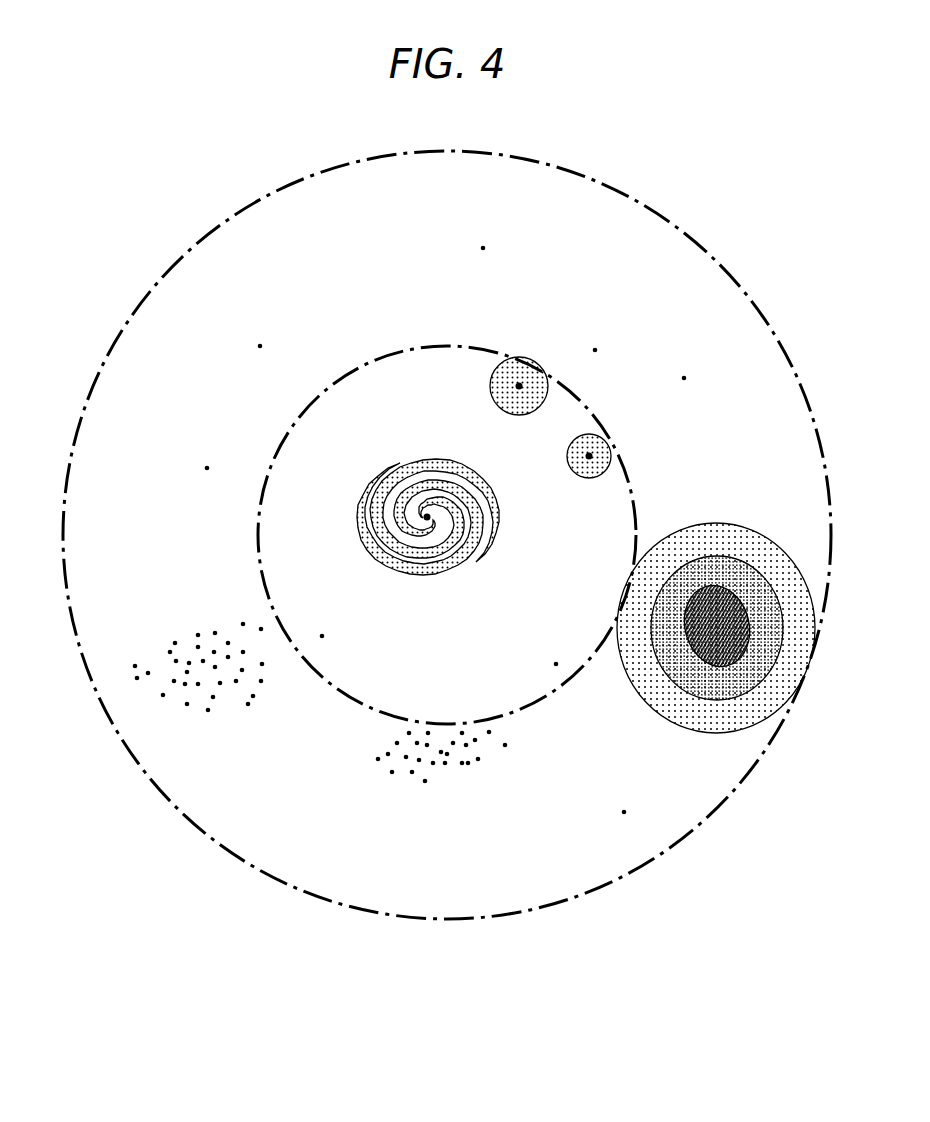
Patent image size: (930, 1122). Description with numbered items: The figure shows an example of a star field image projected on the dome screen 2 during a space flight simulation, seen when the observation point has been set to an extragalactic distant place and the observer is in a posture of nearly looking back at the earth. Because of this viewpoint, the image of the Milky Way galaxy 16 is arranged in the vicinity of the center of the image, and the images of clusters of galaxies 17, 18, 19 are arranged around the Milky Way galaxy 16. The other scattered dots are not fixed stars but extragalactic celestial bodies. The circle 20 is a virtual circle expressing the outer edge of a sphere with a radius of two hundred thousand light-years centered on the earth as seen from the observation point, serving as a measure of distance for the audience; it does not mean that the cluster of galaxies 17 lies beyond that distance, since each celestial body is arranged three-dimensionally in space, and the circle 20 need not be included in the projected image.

The dome screen 2 is at (638, 197).
The circle 20 is at (363, 367).
The Milky Way galaxy 16 is at (430, 460).
The cluster of galaxies 17 is at (760, 547).
The cluster of galaxies 18 is at (212, 678).
The cluster of galaxies 19 is at (430, 768).